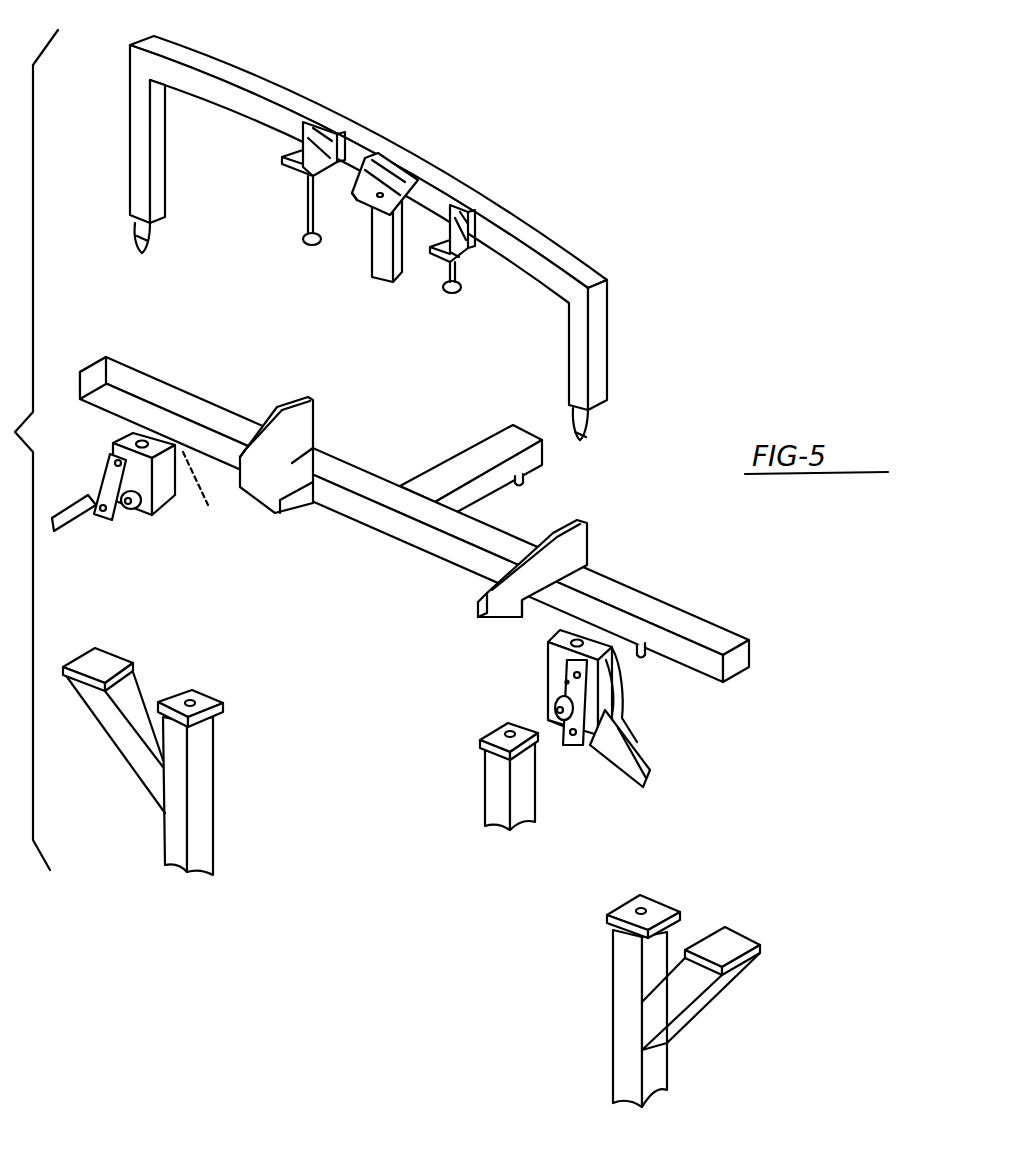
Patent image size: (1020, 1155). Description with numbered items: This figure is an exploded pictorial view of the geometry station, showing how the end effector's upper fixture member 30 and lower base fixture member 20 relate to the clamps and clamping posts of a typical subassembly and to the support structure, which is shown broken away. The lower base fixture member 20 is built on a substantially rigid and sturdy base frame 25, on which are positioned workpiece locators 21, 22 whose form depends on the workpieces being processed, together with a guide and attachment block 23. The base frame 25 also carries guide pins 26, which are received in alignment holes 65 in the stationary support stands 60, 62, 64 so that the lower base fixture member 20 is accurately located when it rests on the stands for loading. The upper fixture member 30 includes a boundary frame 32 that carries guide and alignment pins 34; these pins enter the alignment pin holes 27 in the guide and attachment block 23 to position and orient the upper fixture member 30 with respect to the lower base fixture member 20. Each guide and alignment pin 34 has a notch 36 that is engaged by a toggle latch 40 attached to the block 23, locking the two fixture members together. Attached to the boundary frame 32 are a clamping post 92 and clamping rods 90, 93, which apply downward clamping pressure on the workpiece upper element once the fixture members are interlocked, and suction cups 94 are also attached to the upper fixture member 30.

The lower base fixture member 20 is at (393, 540).
The workpiece locator 21 is at (318, 425).
The workpiece locator 22 is at (588, 547).
The guide and attachment block 23 is at (548, 640).
The base frame 25 is at (487, 440).
The guide pin 26 is at (523, 481).
The alignment pin hole 27 is at (143, 440).
The upper fixture member 30 is at (237, 57).
The boundary frame 32 is at (290, 128).
The guide and alignment pin 34 is at (149, 240).
The notch 36 is at (139, 235).
The toggle latch 40 is at (118, 532).
The stationary support stand 60 is at (623, 1046).
The stationary support stand 62 is at (214, 812).
The stationary support stand 64 is at (494, 793).
The alignment hole 65 is at (193, 700).
The clamping rod 90 is at (305, 209).
The clamping post 92 is at (383, 258).
The clamping rod 93 is at (458, 272).
The suction cup 94 is at (313, 250).